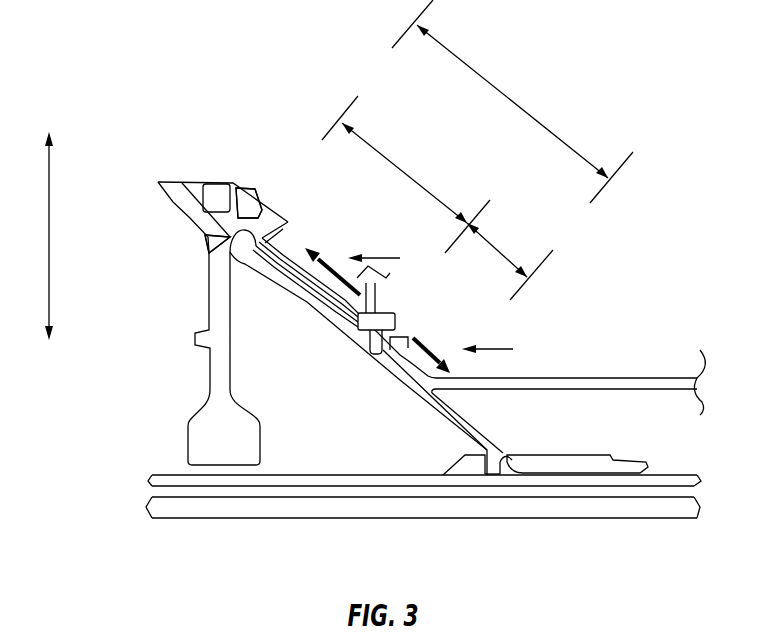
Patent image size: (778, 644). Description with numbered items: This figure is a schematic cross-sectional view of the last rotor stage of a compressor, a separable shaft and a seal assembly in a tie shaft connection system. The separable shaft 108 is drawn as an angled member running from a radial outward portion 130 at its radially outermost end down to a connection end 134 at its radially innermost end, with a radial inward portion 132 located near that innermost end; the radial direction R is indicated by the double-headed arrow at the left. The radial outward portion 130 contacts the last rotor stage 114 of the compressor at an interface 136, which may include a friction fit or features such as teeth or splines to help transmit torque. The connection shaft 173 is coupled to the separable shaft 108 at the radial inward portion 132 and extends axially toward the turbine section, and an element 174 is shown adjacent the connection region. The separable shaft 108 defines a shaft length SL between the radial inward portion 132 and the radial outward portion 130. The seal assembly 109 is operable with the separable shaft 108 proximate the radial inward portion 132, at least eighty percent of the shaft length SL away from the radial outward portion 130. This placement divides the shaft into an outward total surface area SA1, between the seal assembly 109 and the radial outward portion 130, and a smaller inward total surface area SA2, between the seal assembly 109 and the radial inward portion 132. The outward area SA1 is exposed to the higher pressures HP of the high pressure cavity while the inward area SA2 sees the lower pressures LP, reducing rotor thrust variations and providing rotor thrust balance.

The separable shaft 108 is at (307, 302).
The seal assembly 109 is at (395, 325).
The last rotor stage 114 is at (148, 189).
The radial outward portion 130 is at (247, 247).
The radial inward portion 132 is at (424, 383).
The connection end 134 is at (500, 470).
The interface 136 is at (228, 238).
The connection shaft 173 is at (583, 378).
The seal flange 174 is at (593, 455).
The radial direction R is at (49, 232).
The higher pressures HP is at (385, 258).
The lower pressures LP is at (499, 349).
The shaft length SL is at (512, 100).
The outward total surface area SA1 is at (405, 174).
The inward total surface area SA2 is at (495, 248).